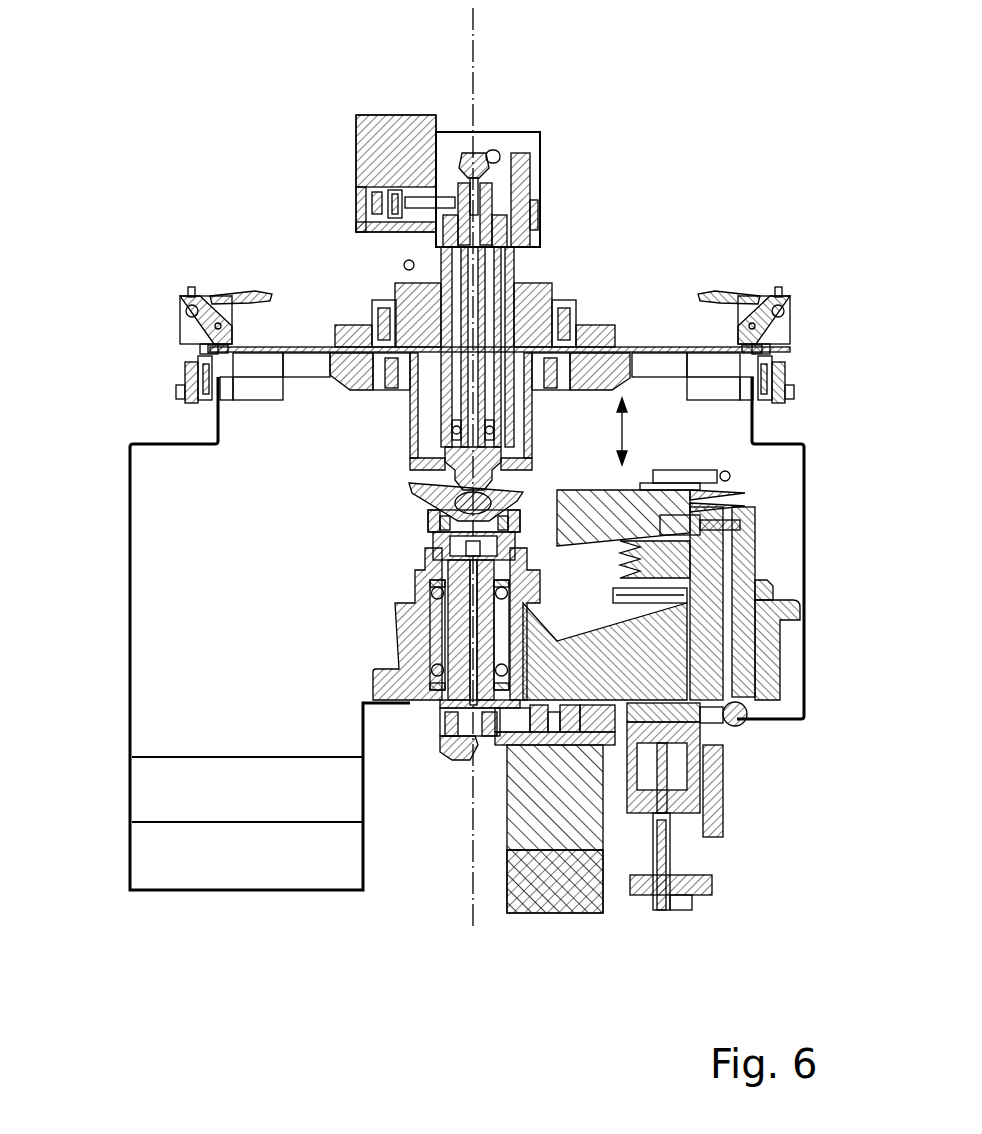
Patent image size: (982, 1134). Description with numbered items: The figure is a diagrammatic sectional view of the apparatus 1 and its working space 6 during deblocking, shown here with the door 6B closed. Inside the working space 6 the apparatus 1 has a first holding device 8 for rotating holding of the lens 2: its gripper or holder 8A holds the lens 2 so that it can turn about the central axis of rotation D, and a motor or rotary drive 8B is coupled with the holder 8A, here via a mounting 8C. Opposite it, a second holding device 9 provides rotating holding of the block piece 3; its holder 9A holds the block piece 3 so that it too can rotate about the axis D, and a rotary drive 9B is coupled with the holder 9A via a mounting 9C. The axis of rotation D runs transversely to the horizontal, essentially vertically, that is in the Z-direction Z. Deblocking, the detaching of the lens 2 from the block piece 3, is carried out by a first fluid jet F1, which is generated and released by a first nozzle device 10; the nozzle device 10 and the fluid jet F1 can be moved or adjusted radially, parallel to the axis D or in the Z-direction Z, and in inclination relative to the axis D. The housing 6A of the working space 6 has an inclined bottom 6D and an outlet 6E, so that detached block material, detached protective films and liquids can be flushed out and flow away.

The apparatus 1 is at (173, 141).
The lens 2 is at (428, 491).
The block piece 3 is at (440, 507).
The working space 6 is at (296, 449).
The housing 6A is at (806, 520).
The door 6B is at (680, 347).
The inclined bottom 6D is at (637, 590).
The outlet 6E is at (363, 788).
The first holding device 8 is at (486, 331).
The holder 8A is at (413, 484).
The rotary drive 8B is at (366, 210).
The mounting 8C is at (485, 277).
The second holding device 9 is at (427, 543).
The holder 9A is at (510, 527).
The rotary drive 9B is at (507, 833).
The mounting 9C is at (447, 643).
The first nozzle device 10 is at (560, 490).
The axis of rotation D is at (478, 28).
The fluid jet F1 is at (525, 503).
The Z-direction Z is at (630, 428).